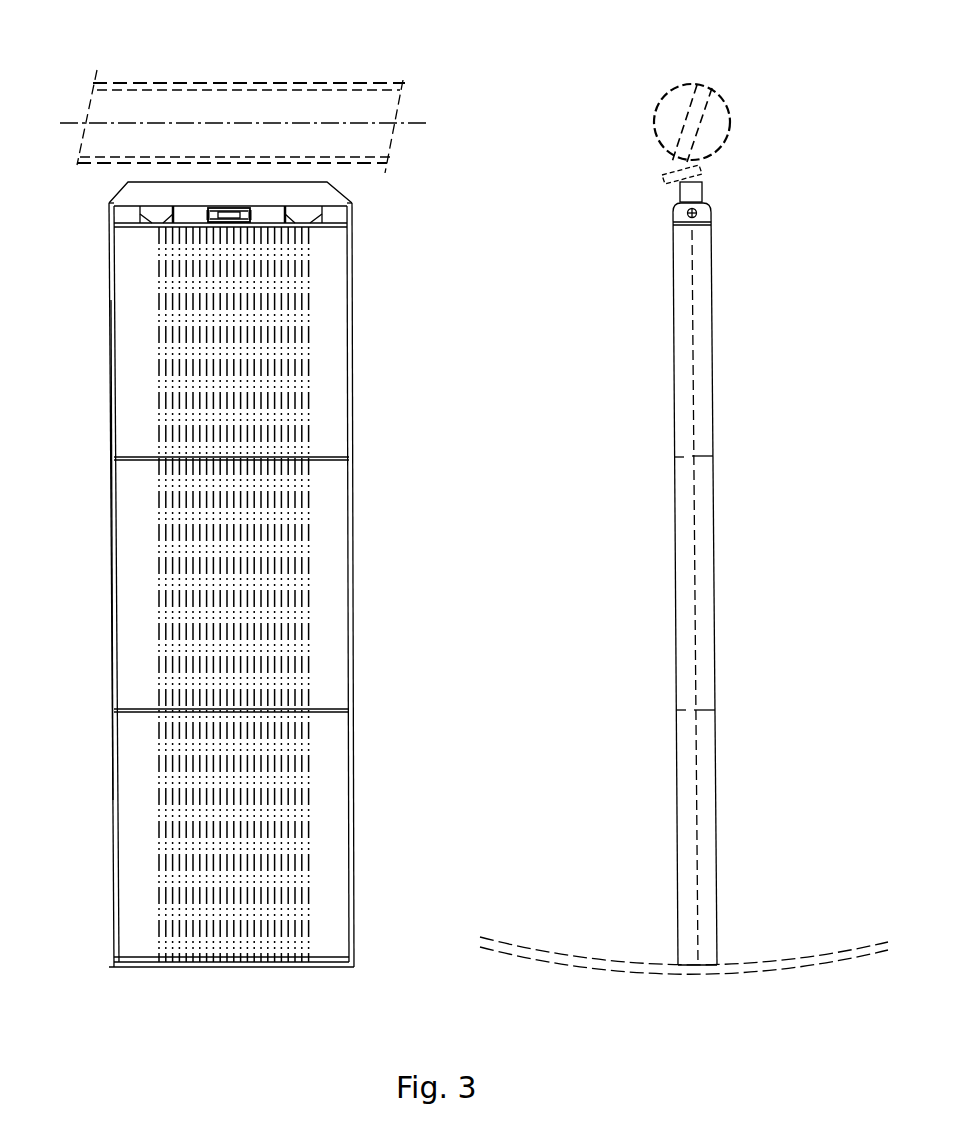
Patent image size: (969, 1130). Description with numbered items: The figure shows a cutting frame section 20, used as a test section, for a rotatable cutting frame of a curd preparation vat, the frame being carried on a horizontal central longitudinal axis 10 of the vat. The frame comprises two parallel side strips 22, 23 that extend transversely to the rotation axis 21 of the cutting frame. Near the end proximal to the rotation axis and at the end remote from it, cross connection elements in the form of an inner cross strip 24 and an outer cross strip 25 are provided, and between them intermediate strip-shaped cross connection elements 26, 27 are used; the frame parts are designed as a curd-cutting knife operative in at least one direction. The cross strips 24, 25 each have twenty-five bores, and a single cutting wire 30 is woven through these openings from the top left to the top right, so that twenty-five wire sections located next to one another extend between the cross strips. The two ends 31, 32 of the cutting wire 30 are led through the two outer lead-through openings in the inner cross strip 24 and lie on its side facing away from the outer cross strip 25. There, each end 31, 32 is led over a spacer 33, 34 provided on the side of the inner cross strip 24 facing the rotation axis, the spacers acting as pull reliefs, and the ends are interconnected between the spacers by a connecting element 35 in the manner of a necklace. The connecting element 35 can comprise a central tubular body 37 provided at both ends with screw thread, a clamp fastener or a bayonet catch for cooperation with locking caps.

The horizontal central longitudinal axis 10 is at (367, 107).
The cutting frame section 20 is at (88, 377).
The rotation axis 21 is at (330, 123).
The side strip 22 is at (355, 544).
The side strip 23 is at (105, 545).
The inner cross strip 24 is at (417, 249).
The outer cross strip 25 is at (459, 932).
The intermediate strip-shaped cross connection element 26 is at (462, 412).
The intermediate strip-shaped cross connection element 27 is at (462, 671).
The cutting wire 30 is at (312, 808).
The end of the cutting wire 31 is at (205, 213).
The end of the cutting wire 32 is at (253, 213).
The spacer 33 is at (230, 212).
The spacer 34 is at (230, 212).
The connecting element 35 is at (228, 207).
The central tubular body 37 is at (240, 212).